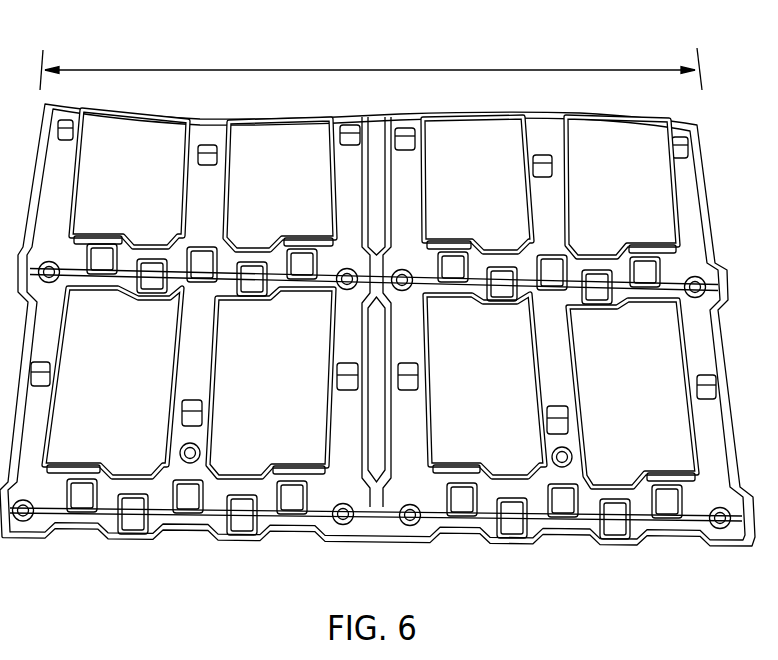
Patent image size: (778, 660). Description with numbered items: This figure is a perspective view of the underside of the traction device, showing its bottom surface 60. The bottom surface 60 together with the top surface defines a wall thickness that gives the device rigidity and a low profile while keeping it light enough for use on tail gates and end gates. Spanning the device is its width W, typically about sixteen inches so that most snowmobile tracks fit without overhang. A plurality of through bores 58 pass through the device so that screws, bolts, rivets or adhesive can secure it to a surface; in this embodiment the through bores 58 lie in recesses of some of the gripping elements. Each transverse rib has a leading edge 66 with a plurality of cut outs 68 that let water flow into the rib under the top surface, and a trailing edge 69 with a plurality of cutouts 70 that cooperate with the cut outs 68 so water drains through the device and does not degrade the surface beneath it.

The width W is at (377, 67).
The through bores 58 is at (413, 525).
The bottom surface 60 is at (688, 187).
The leading edge 66 is at (296, 302).
The cut outs 68 is at (251, 294).
The trailing edge 69 is at (252, 236).
The cutouts 70 is at (300, 235).